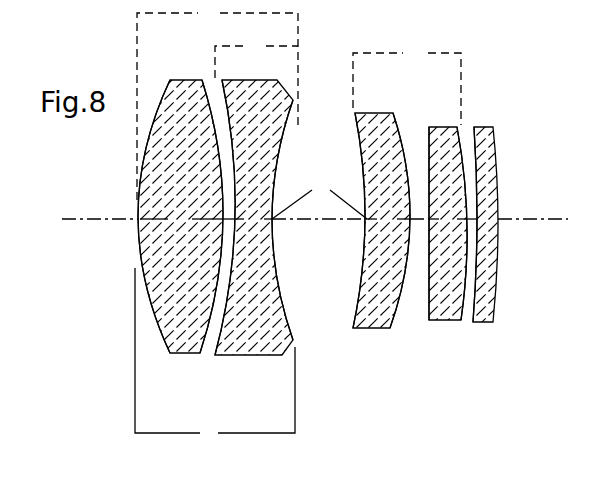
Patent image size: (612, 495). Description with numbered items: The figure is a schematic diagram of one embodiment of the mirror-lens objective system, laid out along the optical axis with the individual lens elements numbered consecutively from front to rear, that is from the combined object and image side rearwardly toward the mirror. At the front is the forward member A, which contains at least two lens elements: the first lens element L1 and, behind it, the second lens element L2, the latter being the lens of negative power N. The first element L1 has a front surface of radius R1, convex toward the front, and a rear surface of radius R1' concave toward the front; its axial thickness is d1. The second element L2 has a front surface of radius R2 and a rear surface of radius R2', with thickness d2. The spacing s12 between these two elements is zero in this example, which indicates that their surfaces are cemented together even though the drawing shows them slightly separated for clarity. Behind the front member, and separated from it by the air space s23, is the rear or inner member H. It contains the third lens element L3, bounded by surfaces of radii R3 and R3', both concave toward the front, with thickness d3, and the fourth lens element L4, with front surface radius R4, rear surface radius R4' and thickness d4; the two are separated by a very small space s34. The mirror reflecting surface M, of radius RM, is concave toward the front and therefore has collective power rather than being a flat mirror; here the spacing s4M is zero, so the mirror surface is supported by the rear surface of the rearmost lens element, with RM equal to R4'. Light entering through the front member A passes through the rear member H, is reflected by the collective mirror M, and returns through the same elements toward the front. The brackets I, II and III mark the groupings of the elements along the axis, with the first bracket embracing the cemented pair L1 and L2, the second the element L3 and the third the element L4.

The first lens element L1 is at (180, 343).
The second lens element L2 is at (258, 352).
The third lens element L3 is at (370, 330).
The fourth lens element L4 is at (440, 322).
The mirror reflecting surface M is at (487, 321).
The front surface radius of element 1 R1 is at (133, 216).
The rear surface radius of element 1 R1' is at (186, 197).
The front surface radius of element 2 R2 is at (210, 199).
The rear surface radius of element 2 R2' is at (300, 220).
The front surface radius of element 3 R3 is at (343, 192).
The rear surface radius of element 3 R3' is at (388, 203).
The front surface radius of element 4 R4 is at (429, 204).
The rear surface radius of element 4 R4' is at (476, 197).
The mirror radius RM is at (474, 131).
The thickness of element 1 d1 is at (181, 220).
The thickness of element 2 d2 is at (253, 220).
The thickness of element 3 d3 is at (388, 220).
The thickness of element 4 d4 is at (448, 220).
The spacing between elements 1 and 2 s12 is at (229, 224).
The spacing between elements 2 and 3 s23 is at (319, 222).
The spacing between elements 3 and 4 s34 is at (415, 222).
The spacing between element 4 and mirror s4M is at (469, 222).
The front member A is at (217, 101).
The negative lens element N is at (256, 57).
The rear member H is at (407, 79).
The lens group I is at (215, 357).
The lens group II is at (370, 410).
The lens group III is at (440, 410).